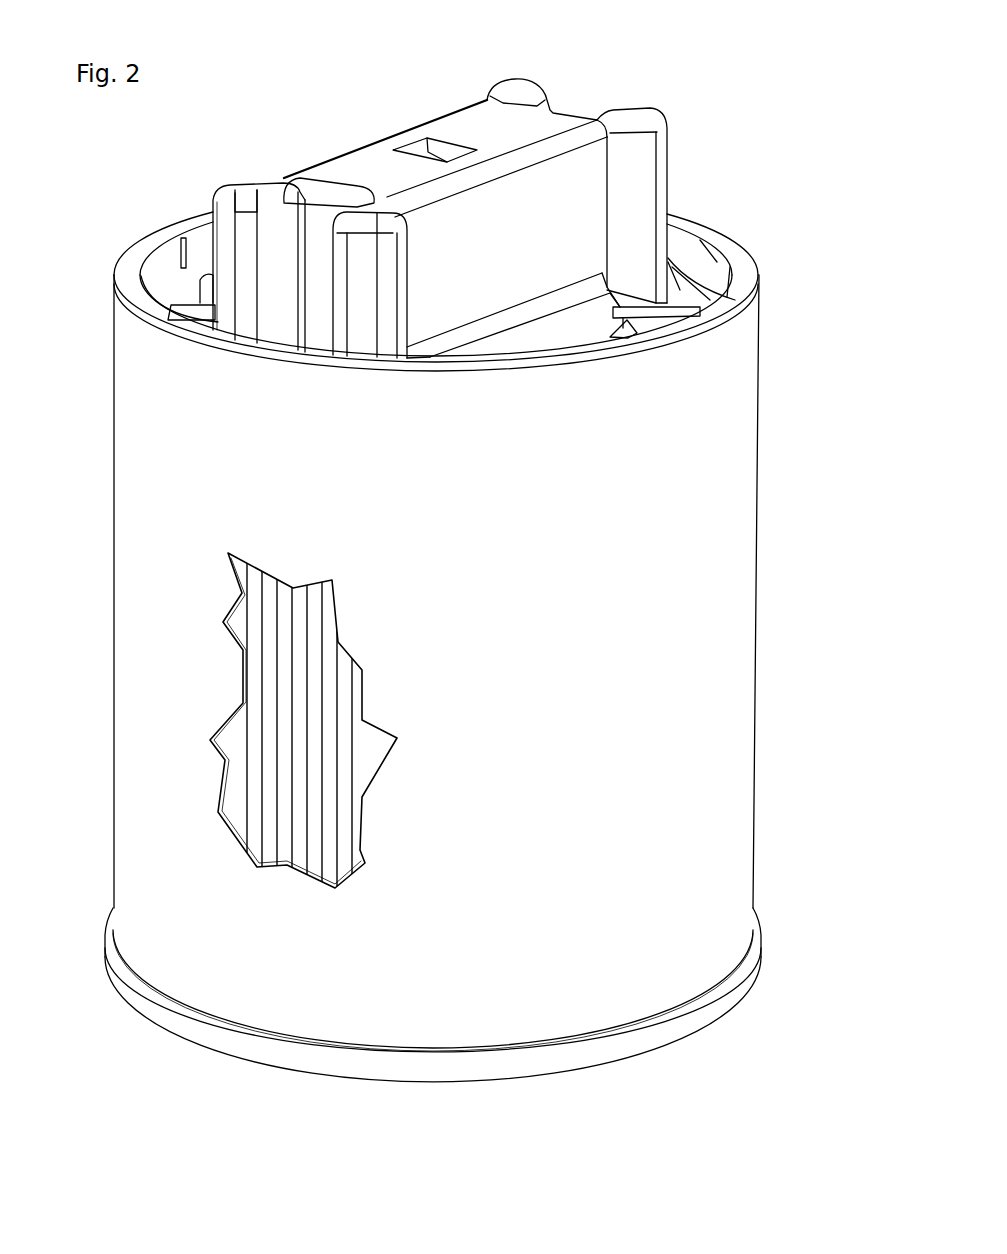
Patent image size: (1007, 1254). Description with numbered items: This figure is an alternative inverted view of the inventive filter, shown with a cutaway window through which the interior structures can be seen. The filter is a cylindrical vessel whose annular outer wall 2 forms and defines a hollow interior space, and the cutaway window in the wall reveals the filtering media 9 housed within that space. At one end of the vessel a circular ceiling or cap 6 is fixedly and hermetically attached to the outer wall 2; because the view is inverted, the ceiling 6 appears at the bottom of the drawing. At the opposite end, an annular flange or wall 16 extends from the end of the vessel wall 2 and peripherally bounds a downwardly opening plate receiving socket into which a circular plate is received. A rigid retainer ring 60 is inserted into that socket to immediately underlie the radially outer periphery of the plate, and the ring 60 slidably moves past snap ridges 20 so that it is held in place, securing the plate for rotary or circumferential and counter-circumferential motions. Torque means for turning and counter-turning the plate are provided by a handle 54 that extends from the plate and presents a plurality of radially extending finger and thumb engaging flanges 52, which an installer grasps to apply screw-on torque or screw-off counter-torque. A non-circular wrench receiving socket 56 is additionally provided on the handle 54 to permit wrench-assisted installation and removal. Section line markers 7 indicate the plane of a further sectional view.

The annular outer wall 2 is at (628, 579).
The ceiling 6 is at (723, 1005).
The section line 7 is at (128, 255).
The filtering media 9 is at (280, 720).
The annular wall 16 is at (740, 295).
The snap ridges 20 is at (712, 257).
The finger and thumb engaging flanges 52 is at (247, 193).
The handle 54 is at (478, 122).
The wrench receiving socket 56 is at (432, 147).
The retainer ring 60 is at (677, 273).